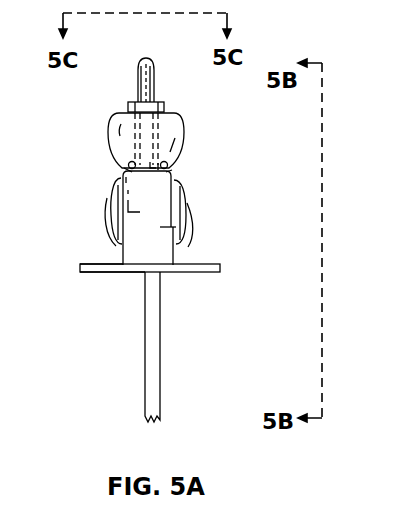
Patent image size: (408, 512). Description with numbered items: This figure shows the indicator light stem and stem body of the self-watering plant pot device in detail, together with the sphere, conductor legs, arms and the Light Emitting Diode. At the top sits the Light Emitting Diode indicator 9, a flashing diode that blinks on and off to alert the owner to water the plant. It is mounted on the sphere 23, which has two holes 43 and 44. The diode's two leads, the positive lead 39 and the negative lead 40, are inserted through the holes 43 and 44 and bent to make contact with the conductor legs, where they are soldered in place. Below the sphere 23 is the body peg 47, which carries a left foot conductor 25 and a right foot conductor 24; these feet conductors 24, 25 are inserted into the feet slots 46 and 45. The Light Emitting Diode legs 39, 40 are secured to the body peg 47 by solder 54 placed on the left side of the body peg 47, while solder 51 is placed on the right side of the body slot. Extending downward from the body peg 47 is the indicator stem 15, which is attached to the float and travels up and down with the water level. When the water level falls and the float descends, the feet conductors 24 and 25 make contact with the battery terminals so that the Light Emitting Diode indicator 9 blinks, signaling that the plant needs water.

The Light Emitting Diode indicator 9 is at (156, 72).
The sphere hole 43 is at (184, 125).
The sphere 23 is at (109, 140).
The sphere hole 44 is at (121, 161).
The body peg 47 is at (173, 172).
The negative lead 40 is at (186, 190).
The feet slot 46 is at (135, 205).
The feet slot 45 is at (168, 235).
The positive lead 39 is at (108, 198).
The solder 54 is at (108, 226).
The solder 51 is at (192, 233).
The right foot conductor 24 is at (202, 272).
The left foot conductor 25 is at (102, 272).
The indicator stem 15 is at (144, 346).